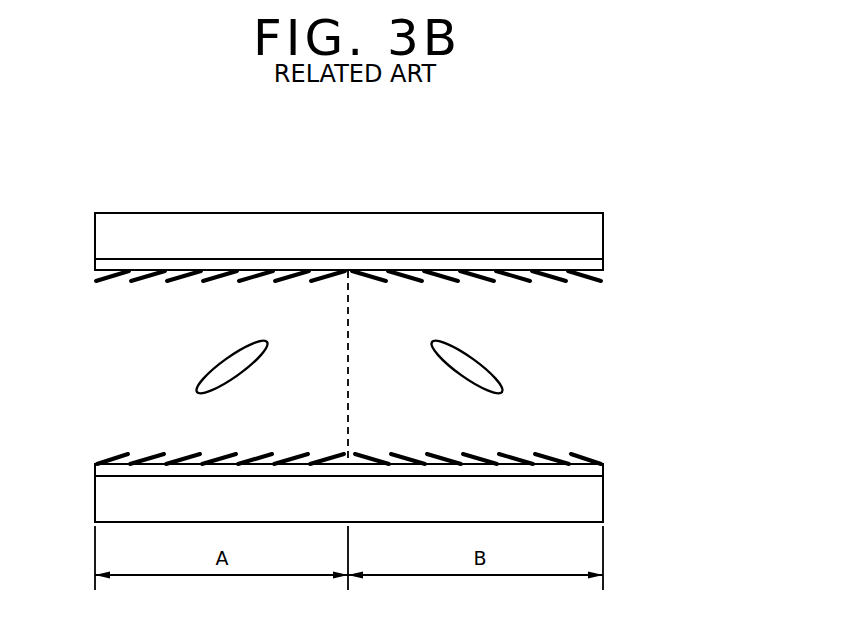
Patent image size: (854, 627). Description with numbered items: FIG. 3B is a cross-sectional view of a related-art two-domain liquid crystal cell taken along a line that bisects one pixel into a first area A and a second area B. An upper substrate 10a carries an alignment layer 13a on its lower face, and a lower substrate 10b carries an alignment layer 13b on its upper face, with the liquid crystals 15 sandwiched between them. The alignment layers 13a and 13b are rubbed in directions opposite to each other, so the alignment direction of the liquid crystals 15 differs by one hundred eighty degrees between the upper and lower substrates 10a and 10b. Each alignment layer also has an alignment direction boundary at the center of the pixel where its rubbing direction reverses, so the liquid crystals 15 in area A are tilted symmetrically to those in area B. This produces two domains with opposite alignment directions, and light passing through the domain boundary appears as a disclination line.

The upper substrate 10a is at (597, 228).
The alignment layer 13a is at (597, 265).
The alignment layer 13b is at (597, 473).
The lower substrate 10b is at (597, 510).
The liquid crystals 15 is at (473, 367).